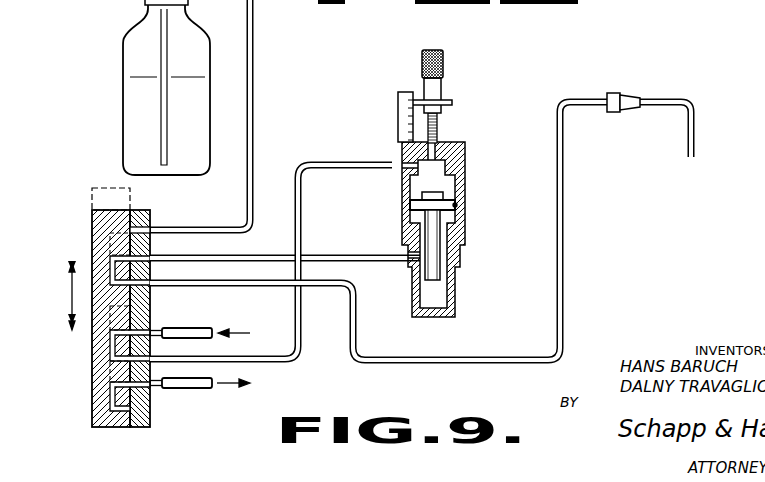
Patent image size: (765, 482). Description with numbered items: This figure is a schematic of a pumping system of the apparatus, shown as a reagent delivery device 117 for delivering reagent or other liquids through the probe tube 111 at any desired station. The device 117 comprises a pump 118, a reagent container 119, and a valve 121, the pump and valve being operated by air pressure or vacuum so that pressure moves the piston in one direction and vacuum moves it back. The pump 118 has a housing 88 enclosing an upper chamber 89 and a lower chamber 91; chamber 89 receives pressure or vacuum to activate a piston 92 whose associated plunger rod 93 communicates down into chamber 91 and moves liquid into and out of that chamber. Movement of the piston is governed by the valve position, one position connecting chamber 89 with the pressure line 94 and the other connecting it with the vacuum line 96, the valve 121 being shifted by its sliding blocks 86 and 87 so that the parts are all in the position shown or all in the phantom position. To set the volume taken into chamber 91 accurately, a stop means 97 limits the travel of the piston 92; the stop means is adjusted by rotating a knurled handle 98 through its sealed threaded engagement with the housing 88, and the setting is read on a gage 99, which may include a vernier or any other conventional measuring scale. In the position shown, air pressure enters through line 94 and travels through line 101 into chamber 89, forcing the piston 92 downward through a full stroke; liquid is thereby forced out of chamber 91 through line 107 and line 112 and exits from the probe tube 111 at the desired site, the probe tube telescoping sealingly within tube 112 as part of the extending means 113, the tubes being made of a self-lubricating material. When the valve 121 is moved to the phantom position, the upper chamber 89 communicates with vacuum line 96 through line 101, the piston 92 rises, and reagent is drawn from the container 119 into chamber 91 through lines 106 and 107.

The sliding block 86 is at (137, 427).
The sliding block 87 is at (113, 427).
The housing 88 is at (463, 185).
The chamber 89 is at (420, 181).
The chamber 91 is at (440, 297).
The piston 92 is at (458, 204).
The plunger rod 93 is at (432, 240).
The pressure line 94 is at (200, 330).
The vacuum line 96 is at (198, 387).
The stop means 97 is at (438, 137).
The knurled handle 98 is at (445, 62).
The gage 99 is at (398, 97).
The line 101 is at (303, 225).
The line 106 is at (257, 79).
The line 107 is at (327, 258).
The probe tube 111 is at (693, 147).
The tube 112 is at (560, 316).
The extending means 113 is at (617, 90).
The reagent delivery device 117 is at (557, 77).
The pump 118 is at (453, 110).
The reagent container 119 is at (128, 69).
The valve 121 is at (104, 326).